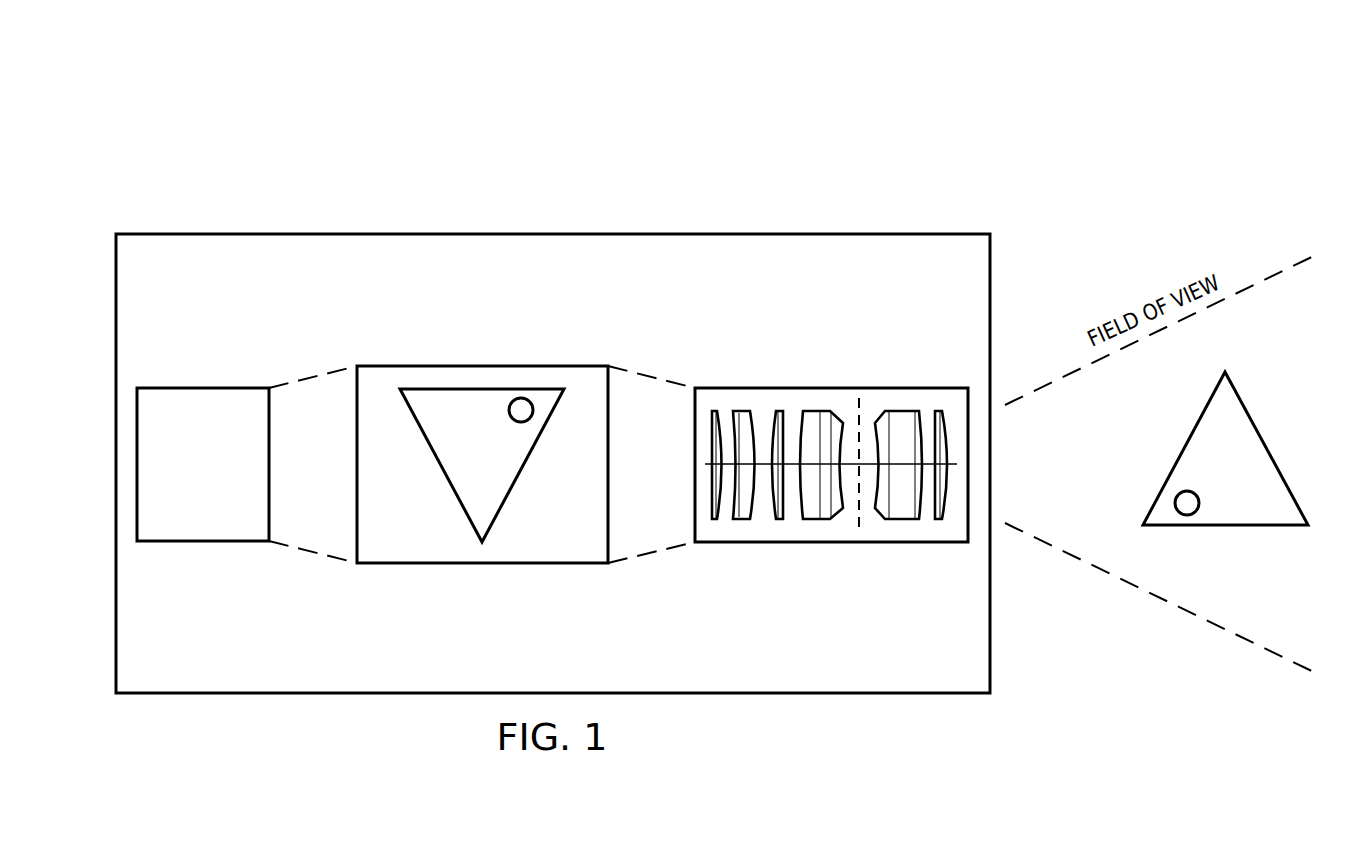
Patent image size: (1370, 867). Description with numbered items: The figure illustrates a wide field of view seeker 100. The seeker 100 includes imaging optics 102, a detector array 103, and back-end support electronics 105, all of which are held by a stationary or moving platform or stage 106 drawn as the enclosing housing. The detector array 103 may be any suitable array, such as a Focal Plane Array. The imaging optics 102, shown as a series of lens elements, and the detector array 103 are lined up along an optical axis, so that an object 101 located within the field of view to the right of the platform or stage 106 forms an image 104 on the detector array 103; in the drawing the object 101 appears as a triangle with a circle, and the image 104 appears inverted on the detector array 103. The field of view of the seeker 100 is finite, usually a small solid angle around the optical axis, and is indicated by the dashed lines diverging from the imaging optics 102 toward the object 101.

The wide field of view seeker 100 is at (340, 96).
The object 101 is at (1225, 527).
The imaging optics 102 is at (832, 385).
The detector array 103 is at (482, 365).
The image 104 is at (441, 467).
The back-end support electronics 105 is at (183, 479).
The platform or stage 106 is at (404, 226).